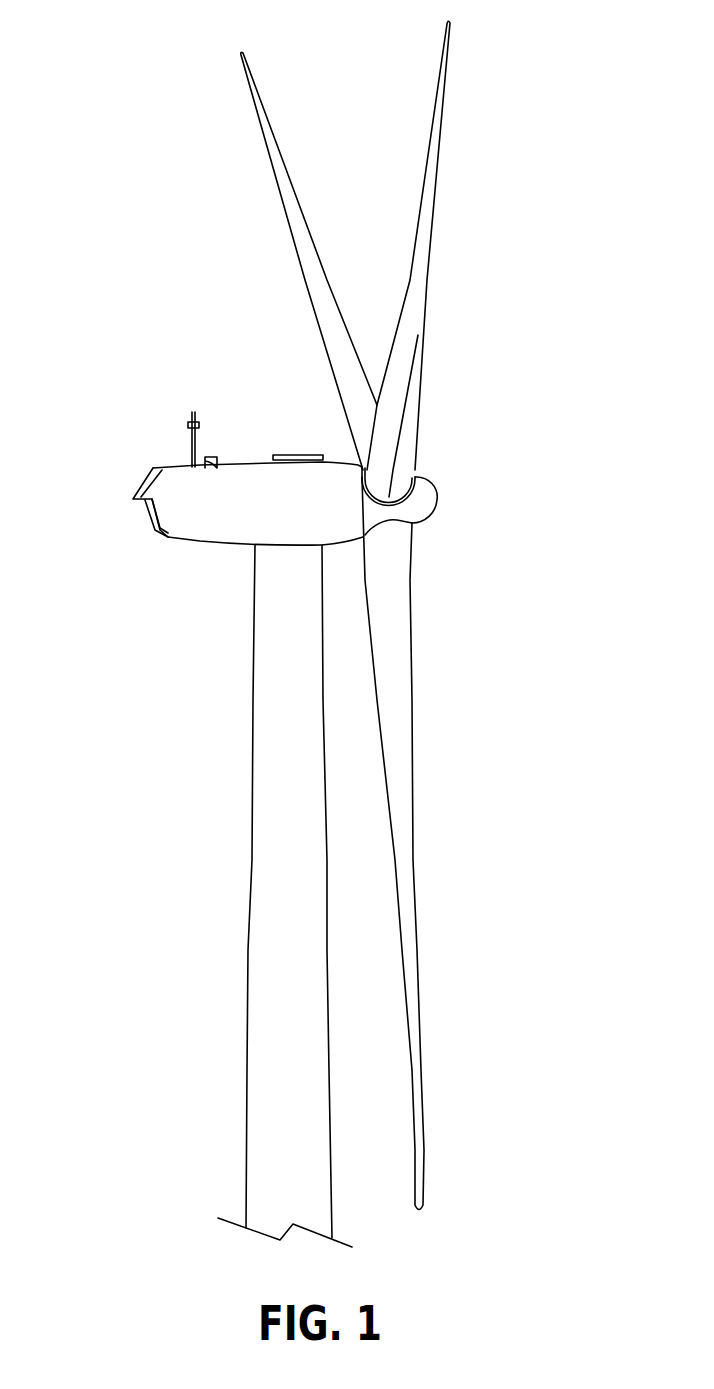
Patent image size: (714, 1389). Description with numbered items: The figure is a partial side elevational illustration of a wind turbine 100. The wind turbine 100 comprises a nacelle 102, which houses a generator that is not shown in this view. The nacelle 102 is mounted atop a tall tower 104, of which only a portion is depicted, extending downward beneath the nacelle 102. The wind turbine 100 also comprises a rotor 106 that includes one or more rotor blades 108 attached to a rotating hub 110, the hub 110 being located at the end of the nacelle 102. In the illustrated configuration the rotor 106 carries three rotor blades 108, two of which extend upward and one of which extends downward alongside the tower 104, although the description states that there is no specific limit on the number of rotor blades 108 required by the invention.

The wind turbine 100 is at (148, 205).
The nacelle 102 is at (203, 543).
The tower 104 is at (252, 743).
The rotor 106 is at (490, 262).
The rotor blades 108 is at (270, 125).
The rotating hub 110 is at (435, 499).